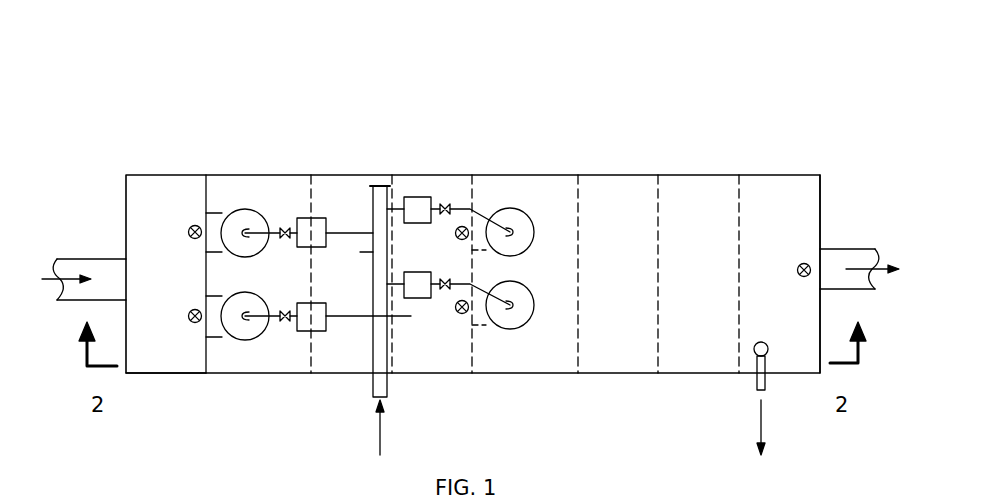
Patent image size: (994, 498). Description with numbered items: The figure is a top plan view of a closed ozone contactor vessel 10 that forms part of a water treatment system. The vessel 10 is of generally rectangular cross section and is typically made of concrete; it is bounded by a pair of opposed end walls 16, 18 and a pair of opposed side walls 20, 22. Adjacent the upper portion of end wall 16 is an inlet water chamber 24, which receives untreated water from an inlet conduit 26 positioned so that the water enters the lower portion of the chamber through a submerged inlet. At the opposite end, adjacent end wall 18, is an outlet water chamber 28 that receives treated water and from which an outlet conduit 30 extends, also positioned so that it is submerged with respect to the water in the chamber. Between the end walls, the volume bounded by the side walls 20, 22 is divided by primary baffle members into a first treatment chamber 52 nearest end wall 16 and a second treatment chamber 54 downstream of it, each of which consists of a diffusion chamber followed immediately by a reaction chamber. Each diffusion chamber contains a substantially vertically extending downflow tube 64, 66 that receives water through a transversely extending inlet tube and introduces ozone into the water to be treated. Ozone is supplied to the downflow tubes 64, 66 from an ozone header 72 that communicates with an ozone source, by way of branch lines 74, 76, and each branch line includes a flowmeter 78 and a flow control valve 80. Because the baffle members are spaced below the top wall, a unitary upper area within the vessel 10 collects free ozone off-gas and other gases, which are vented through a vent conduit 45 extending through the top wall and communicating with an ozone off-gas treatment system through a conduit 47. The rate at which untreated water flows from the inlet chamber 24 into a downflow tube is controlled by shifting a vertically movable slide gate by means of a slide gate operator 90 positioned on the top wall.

The ozone contactor vessel 10 is at (493, 117).
The end wall 16 is at (206, 274).
The end wall 18 is at (822, 182).
The side wall 20 is at (688, 180).
The side wall 22 is at (573, 375).
The inlet water chamber 24 is at (163, 376).
The inlet conduit 26 is at (78, 259).
The outlet water chamber 28 is at (778, 182).
The outlet conduit 30 is at (847, 250).
The vent conduit 45 is at (762, 343).
The conduit 47 is at (757, 382).
The first treatment chamber 52 is at (250, 182).
The second treatment chamber 54 is at (545, 180).
The downflow tube 64 is at (240, 340).
The downflow tube 66 is at (510, 329).
The ozone header 72 is at (386, 394).
The branch line 74 is at (352, 322).
The branch line 76 is at (486, 290).
The flowmeter 78 is at (326, 303).
The flow control valve 80 is at (284, 325).
The slide gate operator 90 is at (190, 228).